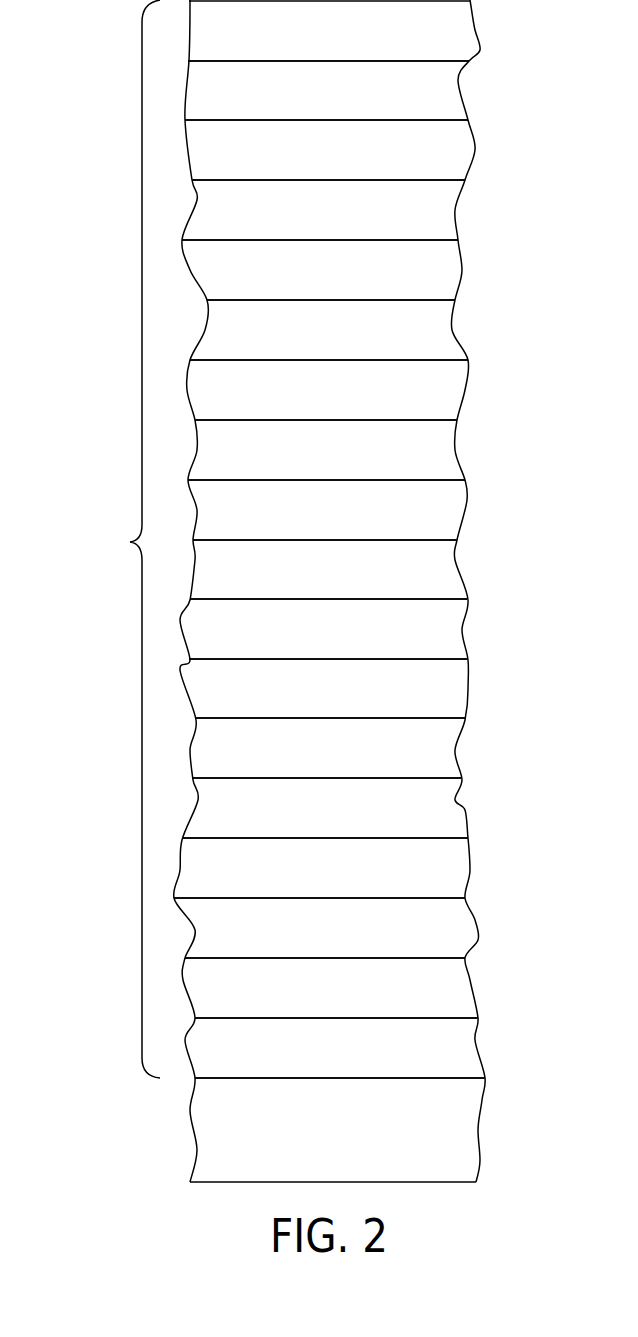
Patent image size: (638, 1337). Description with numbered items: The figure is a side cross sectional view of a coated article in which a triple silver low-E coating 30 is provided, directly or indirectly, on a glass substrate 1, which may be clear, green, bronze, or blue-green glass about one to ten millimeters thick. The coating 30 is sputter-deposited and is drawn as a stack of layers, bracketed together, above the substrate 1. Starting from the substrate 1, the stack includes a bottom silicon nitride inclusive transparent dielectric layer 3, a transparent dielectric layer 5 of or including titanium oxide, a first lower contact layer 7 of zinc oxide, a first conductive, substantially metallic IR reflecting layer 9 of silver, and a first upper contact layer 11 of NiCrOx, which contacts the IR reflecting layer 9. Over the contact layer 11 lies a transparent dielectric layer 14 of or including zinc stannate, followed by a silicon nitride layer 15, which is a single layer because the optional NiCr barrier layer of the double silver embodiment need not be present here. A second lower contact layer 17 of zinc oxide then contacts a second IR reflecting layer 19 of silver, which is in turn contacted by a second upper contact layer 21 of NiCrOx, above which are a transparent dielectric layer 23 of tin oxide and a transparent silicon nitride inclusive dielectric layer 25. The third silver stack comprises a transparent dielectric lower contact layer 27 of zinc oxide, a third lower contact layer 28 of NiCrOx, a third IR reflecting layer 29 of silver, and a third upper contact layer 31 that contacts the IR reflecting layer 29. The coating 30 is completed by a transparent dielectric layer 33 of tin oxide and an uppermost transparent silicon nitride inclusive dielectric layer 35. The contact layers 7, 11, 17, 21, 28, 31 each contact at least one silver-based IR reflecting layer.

The substrate 1 is at (456, 1135).
The bottom silicon nitride inclusive transparent dielectric layer 3 is at (450, 1055).
The transparent dielectric layer of titanium oxide 5 is at (456, 1001).
The first lower contact layer 7 is at (442, 945).
The first IR reflecting layer 9 is at (445, 887).
The first upper contact layer 11 is at (442, 823).
The transparent dielectric layer of zinc stannate 14 is at (442, 771).
The silicon nitride layer 15 is at (440, 698).
The second lower contact layer 17 is at (444, 635).
The second IR reflecting layer 19 is at (444, 580).
The second upper contact layer 21 is at (438, 523).
The transparent dielectric layer 23 is at (440, 461).
The transparent silicon nitride inclusive dielectric layer 25 is at (440, 401).
The transparent dielectric lower contact layer of zinc oxide 27 is at (440, 338).
The third lower contact layer 28 is at (440, 281).
The third IR reflecting layer 29 is at (440, 221).
The third upper contact layer 31 is at (446, 160).
The transparent dielectric layer 33 is at (446, 103).
The transparent silicon nitride inclusive dielectric layer 35 is at (446, 36).
The low-E coating 30 is at (128, 542).